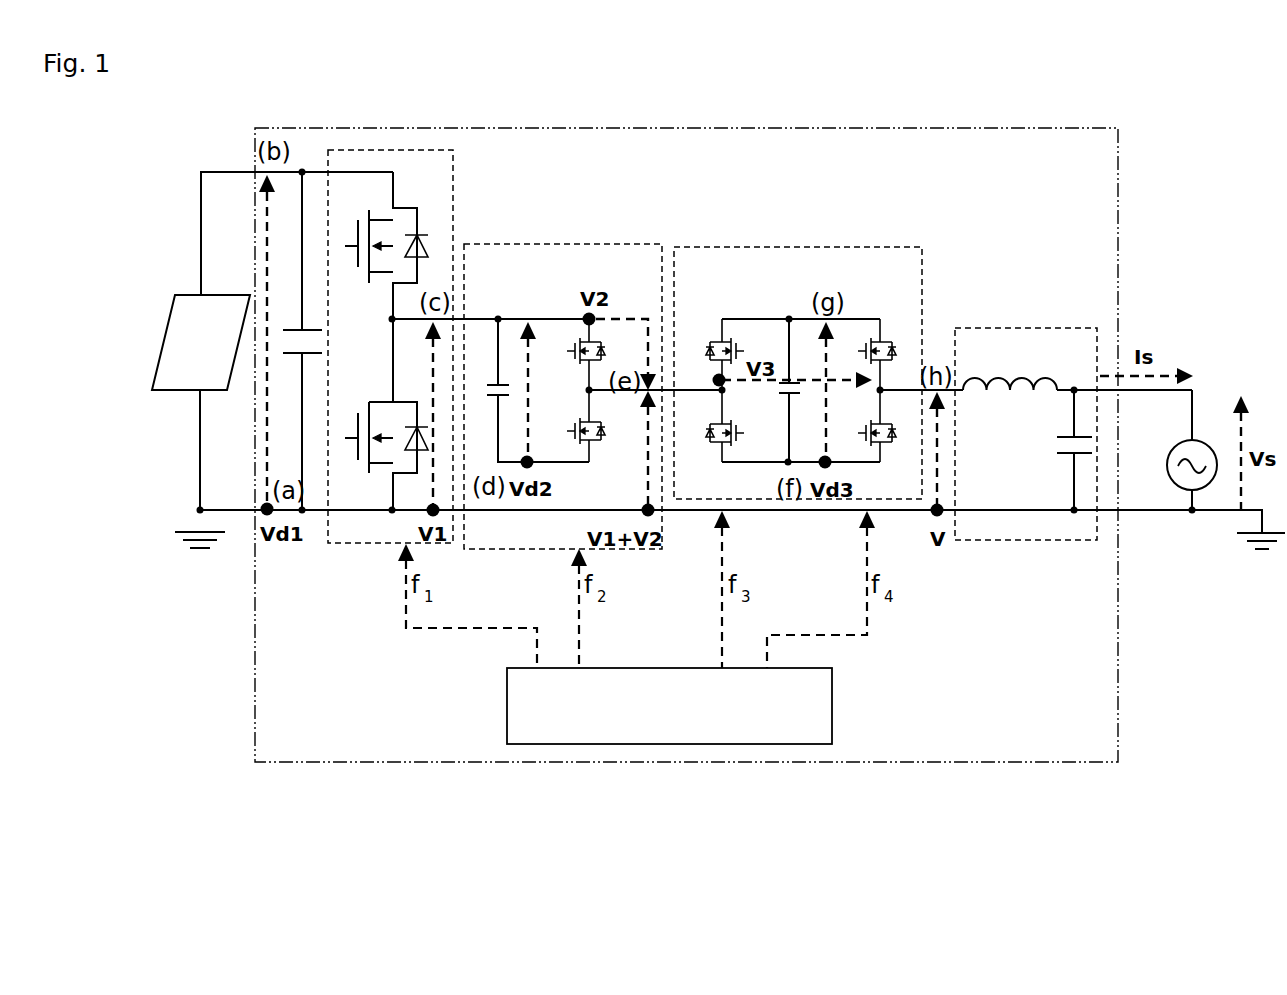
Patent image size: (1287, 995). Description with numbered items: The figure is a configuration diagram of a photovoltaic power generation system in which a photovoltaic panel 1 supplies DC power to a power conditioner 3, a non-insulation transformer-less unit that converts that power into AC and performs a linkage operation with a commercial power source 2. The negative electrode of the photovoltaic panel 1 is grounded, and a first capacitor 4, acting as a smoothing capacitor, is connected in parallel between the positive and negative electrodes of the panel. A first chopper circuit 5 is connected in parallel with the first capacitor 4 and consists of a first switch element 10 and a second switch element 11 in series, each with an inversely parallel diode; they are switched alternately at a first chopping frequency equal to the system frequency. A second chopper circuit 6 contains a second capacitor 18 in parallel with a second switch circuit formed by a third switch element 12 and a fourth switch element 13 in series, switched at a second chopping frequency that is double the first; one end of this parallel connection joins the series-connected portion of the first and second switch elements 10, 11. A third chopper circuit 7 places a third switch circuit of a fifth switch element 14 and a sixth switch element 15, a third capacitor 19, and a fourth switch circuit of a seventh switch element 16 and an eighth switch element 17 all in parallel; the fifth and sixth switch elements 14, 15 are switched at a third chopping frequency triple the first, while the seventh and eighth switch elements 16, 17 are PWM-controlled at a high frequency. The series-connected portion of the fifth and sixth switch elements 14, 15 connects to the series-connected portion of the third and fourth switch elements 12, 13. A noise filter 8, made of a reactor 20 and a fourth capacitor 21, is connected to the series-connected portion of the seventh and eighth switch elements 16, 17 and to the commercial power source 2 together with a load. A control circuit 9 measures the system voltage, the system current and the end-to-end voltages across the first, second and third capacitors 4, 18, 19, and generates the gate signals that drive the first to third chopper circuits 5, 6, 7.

The photovoltaic panel 1 is at (168, 325).
The commercial power source 2 is at (1172, 454).
The power conditioner 3 is at (808, 128).
The first capacitor 4 is at (304, 358).
The first chopper circuit 5 is at (453, 176).
The second chopper circuit 6 is at (565, 244).
The third chopper circuit 7 is at (847, 247).
The noise filter 8 is at (1020, 328).
The control circuit 9 is at (832, 695).
The first switch element 10 is at (367, 276).
The second switch element 11 is at (367, 407).
The third switch element 12 is at (578, 335).
The fourth switch element 13 is at (578, 418).
The fifth switch element 14 is at (739, 332).
The sixth switch element 15 is at (738, 450).
The seventh switch element 16 is at (863, 332).
The eighth switch element 17 is at (874, 451).
The second capacitor 18 is at (495, 398).
The third capacitor 19 is at (781, 390).
The reactor 20 is at (1008, 378).
The fourth capacitor 21 is at (1056, 450).